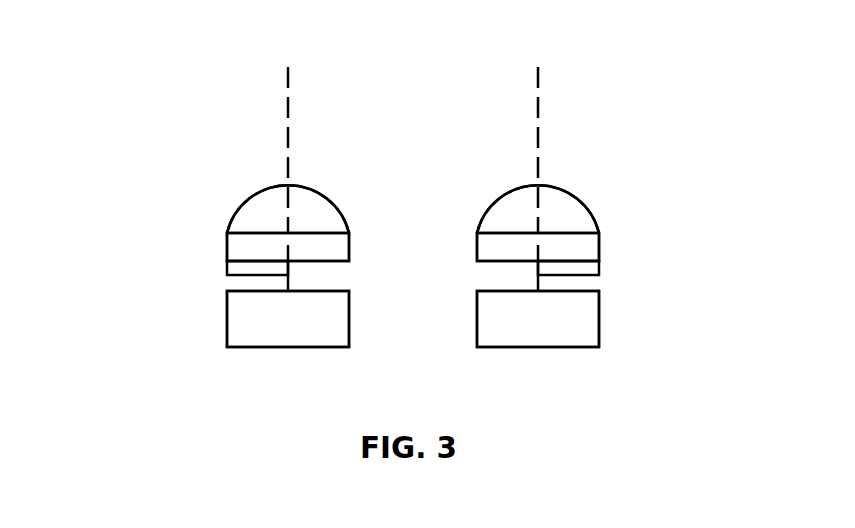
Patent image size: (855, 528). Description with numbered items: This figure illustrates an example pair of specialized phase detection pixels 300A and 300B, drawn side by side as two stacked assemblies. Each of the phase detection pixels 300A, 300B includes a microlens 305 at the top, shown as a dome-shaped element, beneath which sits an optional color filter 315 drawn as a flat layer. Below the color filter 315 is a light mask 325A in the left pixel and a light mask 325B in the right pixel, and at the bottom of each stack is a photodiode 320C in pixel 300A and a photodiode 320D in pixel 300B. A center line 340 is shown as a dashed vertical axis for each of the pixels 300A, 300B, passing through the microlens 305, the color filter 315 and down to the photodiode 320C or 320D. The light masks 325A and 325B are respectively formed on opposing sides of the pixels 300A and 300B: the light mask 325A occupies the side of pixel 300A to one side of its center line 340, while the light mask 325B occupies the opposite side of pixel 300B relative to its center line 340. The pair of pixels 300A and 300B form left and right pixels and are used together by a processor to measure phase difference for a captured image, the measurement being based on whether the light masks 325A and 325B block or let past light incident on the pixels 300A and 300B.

The phase detection pixel 300A is at (198, 101).
The phase detection pixel 300B is at (628, 104).
The microlens 305 is at (318, 194).
The color filter 315 is at (226, 248).
The light mask 325A is at (226, 267).
The light mask 325B is at (599, 267).
The photodiode 320C is at (255, 348).
The photodiode 320D is at (523, 348).
The center line 340 is at (296, 56).